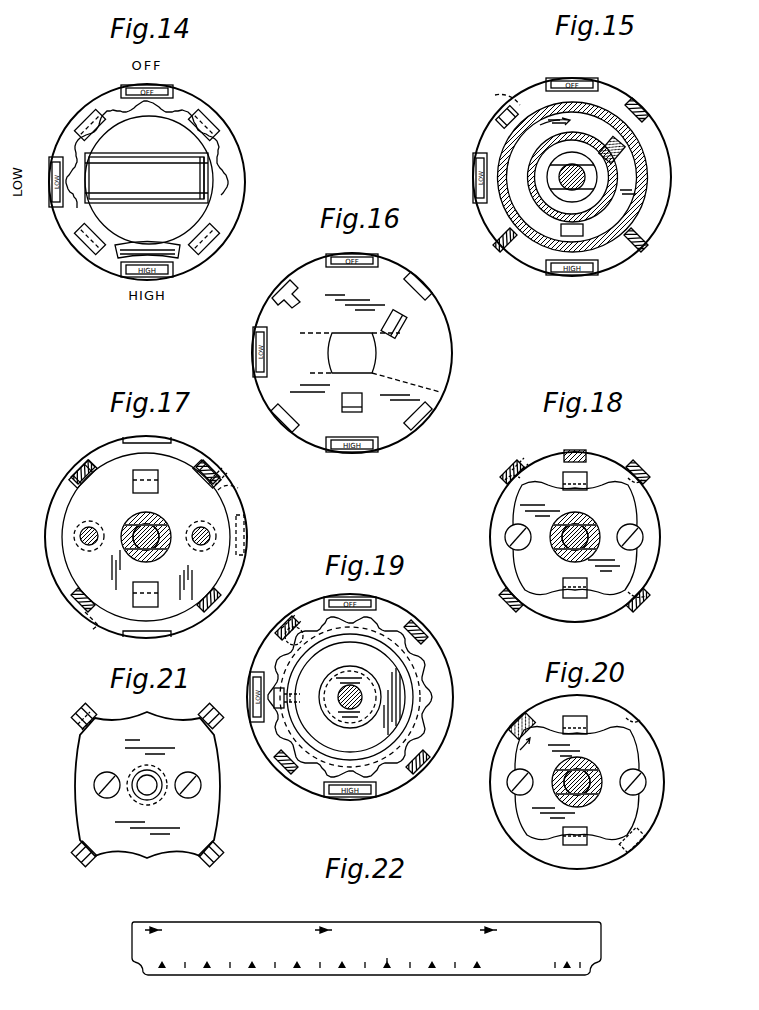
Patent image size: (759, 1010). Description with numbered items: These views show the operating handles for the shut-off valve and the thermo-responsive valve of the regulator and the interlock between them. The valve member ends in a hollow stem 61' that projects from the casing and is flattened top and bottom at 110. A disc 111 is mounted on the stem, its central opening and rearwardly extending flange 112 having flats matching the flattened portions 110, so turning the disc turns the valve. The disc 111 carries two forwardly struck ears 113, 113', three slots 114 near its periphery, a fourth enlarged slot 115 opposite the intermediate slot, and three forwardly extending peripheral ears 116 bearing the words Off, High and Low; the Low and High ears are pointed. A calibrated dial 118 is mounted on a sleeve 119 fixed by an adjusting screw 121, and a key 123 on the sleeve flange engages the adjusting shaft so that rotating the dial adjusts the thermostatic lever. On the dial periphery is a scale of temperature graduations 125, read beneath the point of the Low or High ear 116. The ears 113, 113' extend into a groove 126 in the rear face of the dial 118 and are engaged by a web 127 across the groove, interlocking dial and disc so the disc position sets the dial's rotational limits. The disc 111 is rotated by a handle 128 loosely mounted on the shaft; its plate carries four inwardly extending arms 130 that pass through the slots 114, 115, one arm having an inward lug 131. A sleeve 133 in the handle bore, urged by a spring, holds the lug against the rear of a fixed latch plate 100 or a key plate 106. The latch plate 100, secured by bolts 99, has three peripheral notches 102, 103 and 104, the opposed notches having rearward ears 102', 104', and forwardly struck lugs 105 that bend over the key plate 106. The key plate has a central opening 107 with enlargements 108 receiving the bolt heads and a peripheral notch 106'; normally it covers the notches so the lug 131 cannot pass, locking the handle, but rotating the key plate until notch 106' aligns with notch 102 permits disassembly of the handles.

In FIG. 15, the hollow stem 61' is at (638, 175).
In FIG. 17, the hollow stem 61' is at (104, 556).
In FIG. 18, the hollow stem 61' is at (575, 537).
In FIG. 20, the hollow stem 61' is at (577, 782).
In FIG. 17, the bolts 99 is at (80, 540).
In FIG. 18, the bolts 99 is at (508, 540).
In FIG. 20, the bolts 99 is at (508, 780).
In FIG. 18, the latch plate 100 is at (630, 568).
In FIG. 20, the latch plate 100 is at (532, 816).
In FIG. 17, the notch 102 is at (205, 453).
In FIG. 18, the notch 102 is at (484, 498).
In FIG. 20, the notch 102 is at (495, 739).
In FIG. 17, the ear 102' is at (249, 480).
In FIG. 17, the notch 103 is at (75, 500).
In FIG. 18, the notch 103 is at (640, 484).
In FIG. 20, the notch 103 is at (640, 722).
In FIG. 17, the notch 104 is at (100, 612).
In FIG. 20, the notch 104 is at (676, 815).
In FIG. 17, the ear 104' is at (92, 635).
In FIG. 18, the ear 104' is at (660, 595).
In FIG. 20, the ear 104' is at (663, 839).
In FIG. 17, the lugs or ears 105 is at (130, 478).
In FIG. 18, the lugs or ears 105 is at (578, 598).
In FIG. 20, the lugs or ears 105 is at (590, 722).
In FIG. 18, the key plate 106 is at (548, 538).
In FIG. 20, the key plate 106 is at (577, 807).
In FIG. 18, the notch 106' is at (582, 443).
In FIG. 20, the notch 106' is at (506, 716).
In FIG. 18, the central opening 107 is at (552, 580).
In FIG. 20, the central opening 107 is at (606, 822).
In FIG. 18, the enlargements 108 is at (618, 600).
In FIG. 20, the enlargements 108 is at (508, 810).
In FIG. 15, the flattened portions 110 is at (608, 210).
In FIG. 14, the disc 111 is at (236, 197).
In FIG. 15, the disc 111 is at (630, 95).
In FIG. 16, the disc 111 is at (448, 372).
In FIG. 17, the disc 111 is at (196, 628).
In FIG. 19, the disc 111 is at (440, 668).
In FIG. 16, the rearwardly extending flange 112 is at (440, 395).
In FIG. 15, the ear 113 is at (572, 198).
In FIG. 16, the ear 113 is at (334, 436).
In FIG. 15, the ear 113' is at (655, 135).
In FIG. 16, the ear 113' is at (431, 321).
In FIG. 16, the slots 114 is at (428, 282).
In FIG. 15, the fourth slot 115 is at (500, 122).
In FIG. 16, the fourth slot 115 is at (275, 292).
In FIG. 14, the ears 116 is at (173, 92).
In FIG. 15, the ears 116 is at (542, 88).
In FIG. 16, the ears 116 is at (325, 262).
In FIG. 17, the ears 116 is at (246, 530).
In FIG. 19, the ears 116 is at (372, 792).
In FIG. 14, the calibrated dial 118 is at (115, 250).
In FIG. 15, the calibrated dial 118 is at (538, 188).
In FIG. 19, the calibrated dial 118 is at (416, 660).
In FIG. 15, the sleeve 119 is at (598, 185).
In FIG. 19, the adjusting screw 121 is at (275, 705).
In FIG. 19, the key 123 is at (355, 690).
In FIG. 22, the scale of temperature graduations 125 is at (516, 970).
In FIG. 15, the groove 126 is at (600, 230).
In FIG. 15, the web 127 is at (622, 170).
In FIG. 14, the handle 128 is at (190, 152).
In FIG. 21, the handle 128 is at (85, 797).
In FIG. 14, the arms 130 is at (86, 108).
In FIG. 15, the arms 130 is at (650, 110).
In FIG. 17, the arms 130 is at (82, 465).
In FIG. 18, the arms 130 is at (500, 478).
In FIG. 19, the arms 130 is at (272, 638).
In FIG. 21, the arms 130 is at (80, 710).
In FIG. 15, the lug 131 is at (500, 92).
In FIG. 17, the lug 131 is at (212, 470).
In FIG. 18, the lug 131 is at (520, 468).
In FIG. 19, the lug 131 is at (302, 610).
In FIG. 21, the lug 131 is at (76, 728).
In FIG. 21, the sleeve 133 is at (147, 798).